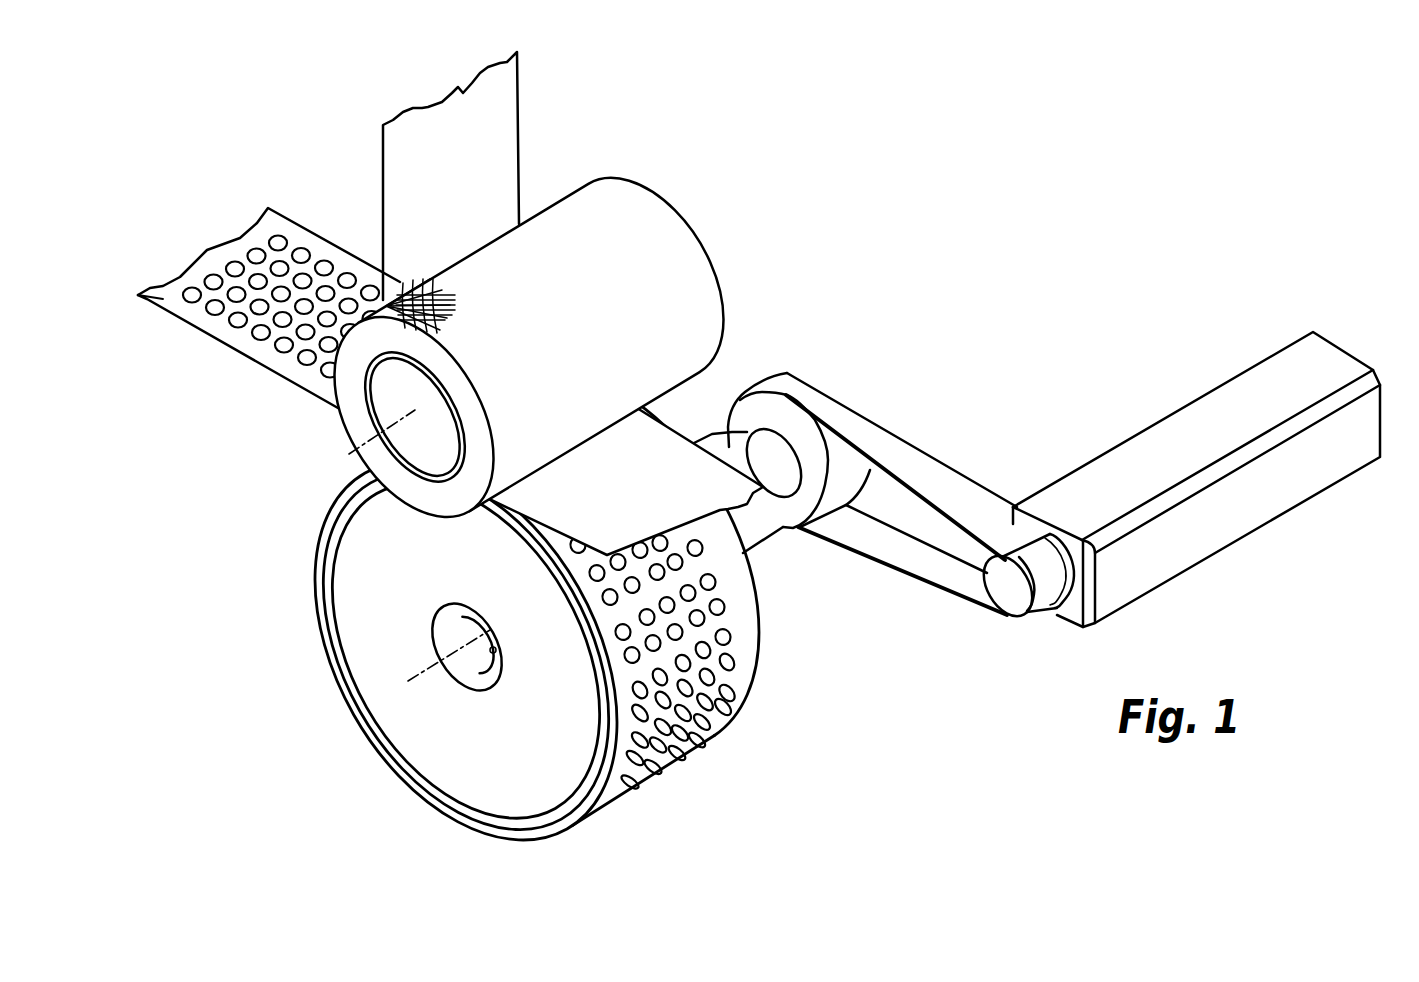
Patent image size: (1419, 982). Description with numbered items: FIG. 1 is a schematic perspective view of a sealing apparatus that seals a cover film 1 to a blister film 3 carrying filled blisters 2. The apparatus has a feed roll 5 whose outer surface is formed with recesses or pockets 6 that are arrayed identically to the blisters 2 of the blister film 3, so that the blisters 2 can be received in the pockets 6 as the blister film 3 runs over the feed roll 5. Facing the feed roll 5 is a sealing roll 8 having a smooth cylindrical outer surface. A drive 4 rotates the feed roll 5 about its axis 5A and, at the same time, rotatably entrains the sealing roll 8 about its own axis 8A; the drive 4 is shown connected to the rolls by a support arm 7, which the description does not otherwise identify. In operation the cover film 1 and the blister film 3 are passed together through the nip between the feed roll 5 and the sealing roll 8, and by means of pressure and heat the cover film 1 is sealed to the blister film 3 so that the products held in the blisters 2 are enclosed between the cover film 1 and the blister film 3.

The cover film 1 is at (240, 277).
The blisters 2 is at (278, 240).
The blister film 3 is at (493, 137).
The drive 4 is at (1297, 377).
The feed roll 5 is at (506, 632).
The axis of the feed roll 5A is at (421, 670).
The recesses or pockets 6 is at (727, 633).
The support arm with bearing hub 7 is at (884, 499).
The sealing roll 8 is at (518, 357).
The axis of the sealing roll 8A is at (354, 446).